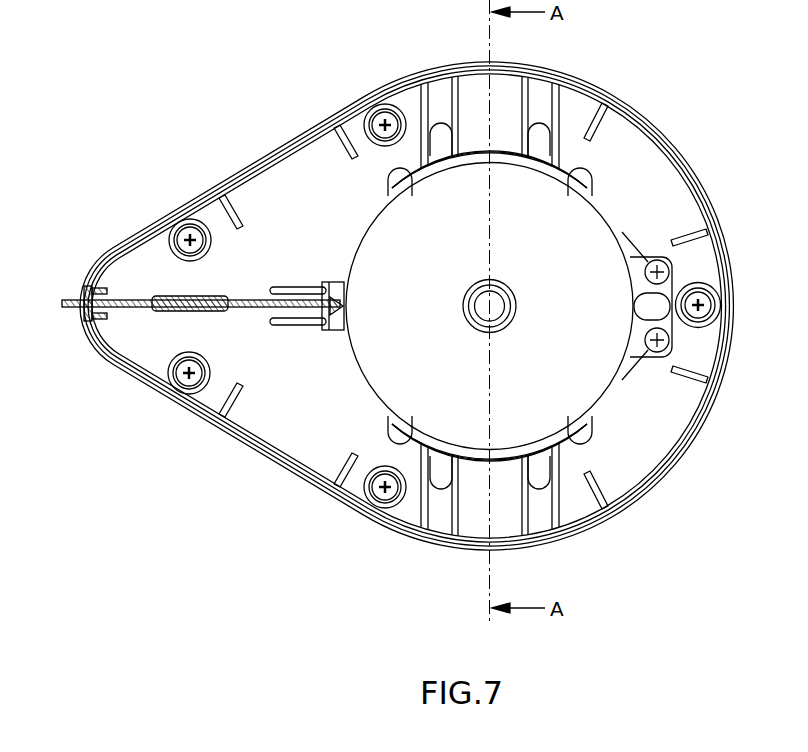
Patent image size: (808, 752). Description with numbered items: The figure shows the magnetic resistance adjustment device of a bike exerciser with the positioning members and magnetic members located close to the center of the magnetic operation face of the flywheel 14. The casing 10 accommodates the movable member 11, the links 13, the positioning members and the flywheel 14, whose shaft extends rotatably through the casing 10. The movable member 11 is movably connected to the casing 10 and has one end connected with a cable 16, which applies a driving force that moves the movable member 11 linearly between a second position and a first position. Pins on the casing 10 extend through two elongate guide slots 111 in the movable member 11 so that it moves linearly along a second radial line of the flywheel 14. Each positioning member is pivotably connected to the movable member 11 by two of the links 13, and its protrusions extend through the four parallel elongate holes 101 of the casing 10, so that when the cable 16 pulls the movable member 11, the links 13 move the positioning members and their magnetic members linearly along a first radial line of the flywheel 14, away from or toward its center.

The casing 10 is at (265, 156).
The elongate holes 101 is at (441, 132).
The movable member 11 is at (327, 333).
The elongate guide slots 111 is at (660, 307).
The links 13 is at (632, 250).
The flywheel 14 is at (577, 205).
The cable 16 is at (130, 308).